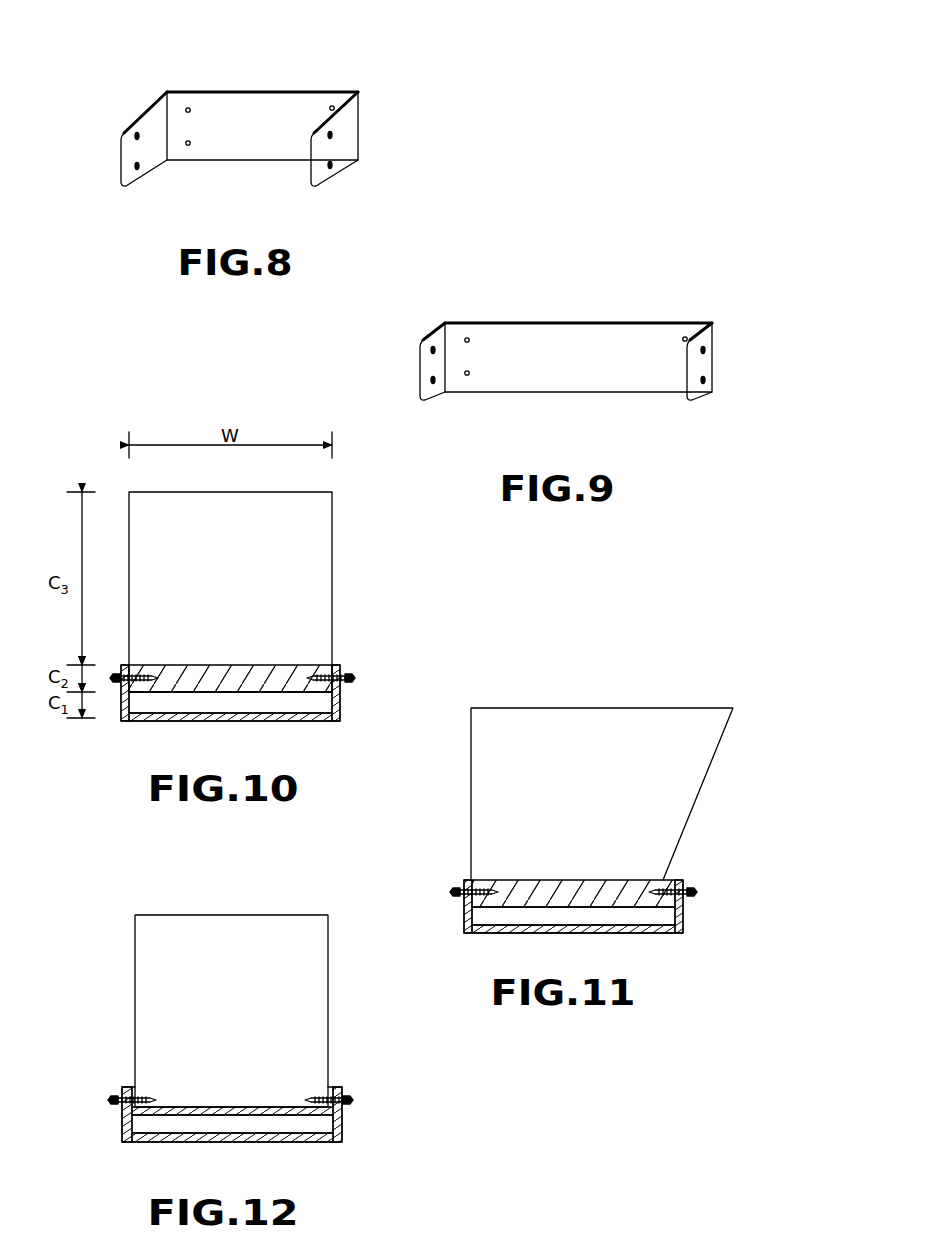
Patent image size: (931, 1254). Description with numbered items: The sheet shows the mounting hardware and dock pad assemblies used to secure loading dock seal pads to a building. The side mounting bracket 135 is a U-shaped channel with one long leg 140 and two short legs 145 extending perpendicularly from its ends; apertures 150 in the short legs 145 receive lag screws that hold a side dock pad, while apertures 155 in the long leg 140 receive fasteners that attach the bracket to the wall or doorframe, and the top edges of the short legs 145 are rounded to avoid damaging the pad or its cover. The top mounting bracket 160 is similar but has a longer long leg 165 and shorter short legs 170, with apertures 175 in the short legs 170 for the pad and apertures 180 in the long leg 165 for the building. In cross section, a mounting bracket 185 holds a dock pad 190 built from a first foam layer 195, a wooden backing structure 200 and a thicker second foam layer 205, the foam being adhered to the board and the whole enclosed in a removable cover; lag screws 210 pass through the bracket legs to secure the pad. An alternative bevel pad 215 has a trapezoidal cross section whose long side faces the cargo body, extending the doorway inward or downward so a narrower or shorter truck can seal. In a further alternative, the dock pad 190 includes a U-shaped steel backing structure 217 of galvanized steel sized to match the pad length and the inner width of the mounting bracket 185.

In FIG. 8, the side mounting bracket 135 is at (348, 67).
In FIG. 8, the long leg 140 is at (265, 152).
In FIG. 8, the short legs 145 is at (356, 104).
In FIG. 8, the apertures 150 is at (134, 165).
In FIG. 8, the apertures 155 is at (190, 141).
In FIG. 9, the top mounting bracket 160 is at (657, 282).
In FIG. 9, the long leg 165 is at (621, 382).
In FIG. 9, the short legs 170 is at (708, 334).
In FIG. 9, the apertures 175 is at (430, 380).
In FIG. 9, the apertures 180 is at (470, 371).
In FIG. 10, the mounting bracket 185 is at (303, 716).
In FIG. 11, the mounting bracket 185 is at (647, 932).
In FIG. 12, the mounting bracket 185 is at (305, 1138).
In FIG. 10, the dock pad 190 is at (348, 550).
In FIG. 12, the dock pad 190 is at (113, 972).
In FIG. 10, the first foam layer 195 is at (323, 703).
In FIG. 11, the first foam layer 195 is at (665, 917).
In FIG. 12, the first foam layer 195 is at (325, 1125).
In FIG. 10, the backing structure 200 is at (313, 668).
In FIG. 11, the backing structure 200 is at (660, 882).
In FIG. 10, the second foam layer 205 is at (313, 610).
In FIG. 12, the second foam layer 205 is at (317, 1032).
In FIG. 10, the lag screws 210 is at (357, 678).
In FIG. 11, the lag screws 210 is at (450, 892).
In FIG. 12, the lag screws 210 is at (108, 1100).
In FIG. 11, the bevel pad 215 is at (480, 805).
In FIG. 12, the steel backing structure 217 is at (182, 1113).